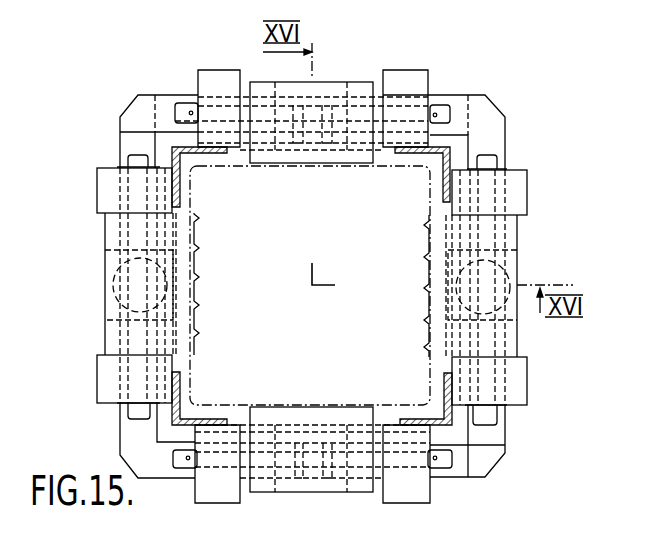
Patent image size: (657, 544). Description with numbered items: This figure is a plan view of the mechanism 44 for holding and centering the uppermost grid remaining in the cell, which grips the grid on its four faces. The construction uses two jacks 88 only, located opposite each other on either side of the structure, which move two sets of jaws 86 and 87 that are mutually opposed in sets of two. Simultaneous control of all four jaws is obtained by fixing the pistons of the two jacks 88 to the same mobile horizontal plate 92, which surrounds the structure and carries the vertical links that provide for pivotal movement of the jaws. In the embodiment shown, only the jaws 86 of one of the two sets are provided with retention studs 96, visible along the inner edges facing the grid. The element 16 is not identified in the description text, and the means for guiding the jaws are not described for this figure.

The liner wear plates 16 is at (173, 152).
The mechanism for holding and centering the uppermost grid 44 is at (502, 100).
The jaws 86 is at (112, 230).
The jaws 87 is at (292, 158).
The jacks 88 is at (112, 292).
The mobile horizontal plate 92 is at (487, 137).
The retention studs 96 is at (198, 310).